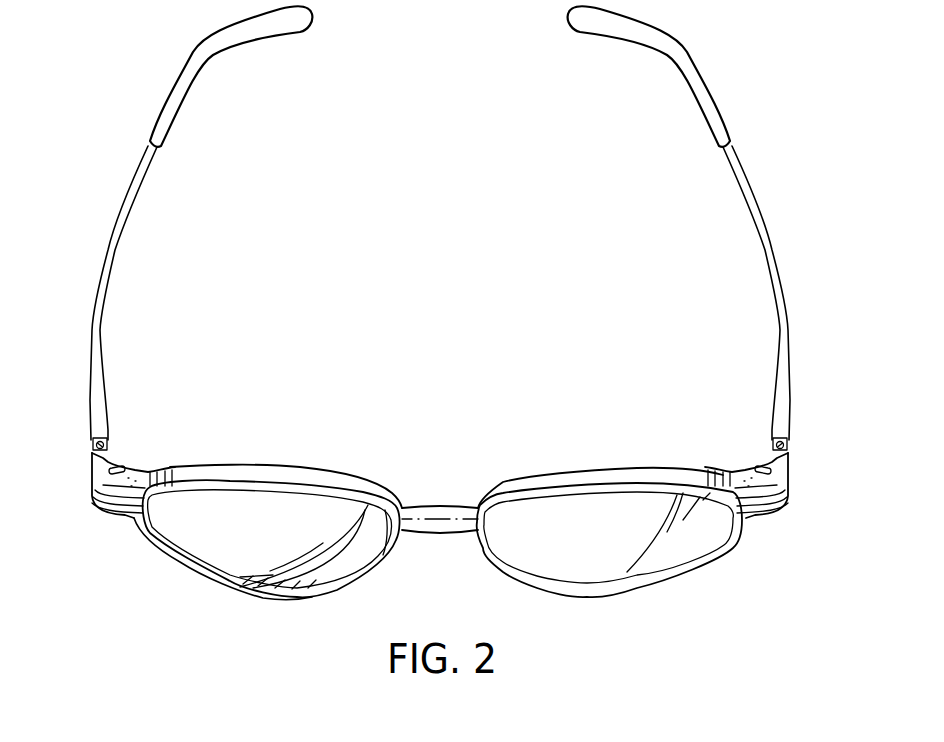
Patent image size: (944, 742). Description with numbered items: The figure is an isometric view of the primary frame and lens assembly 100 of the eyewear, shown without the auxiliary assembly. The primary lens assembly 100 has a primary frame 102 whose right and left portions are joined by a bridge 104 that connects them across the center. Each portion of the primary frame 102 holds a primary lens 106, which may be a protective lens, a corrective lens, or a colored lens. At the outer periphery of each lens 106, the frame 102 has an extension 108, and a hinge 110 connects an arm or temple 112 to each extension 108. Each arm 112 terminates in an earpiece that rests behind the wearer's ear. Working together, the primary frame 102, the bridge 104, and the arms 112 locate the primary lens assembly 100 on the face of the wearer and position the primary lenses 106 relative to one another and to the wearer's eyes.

The primary frame and lens assembly 100 is at (436, 322).
The primary frame 102 is at (258, 473).
The bridge 104 is at (448, 515).
The primary lens 106 is at (222, 545).
The extension 108 is at (102, 505).
The hinge 110 is at (93, 456).
The arm 112 is at (107, 238).